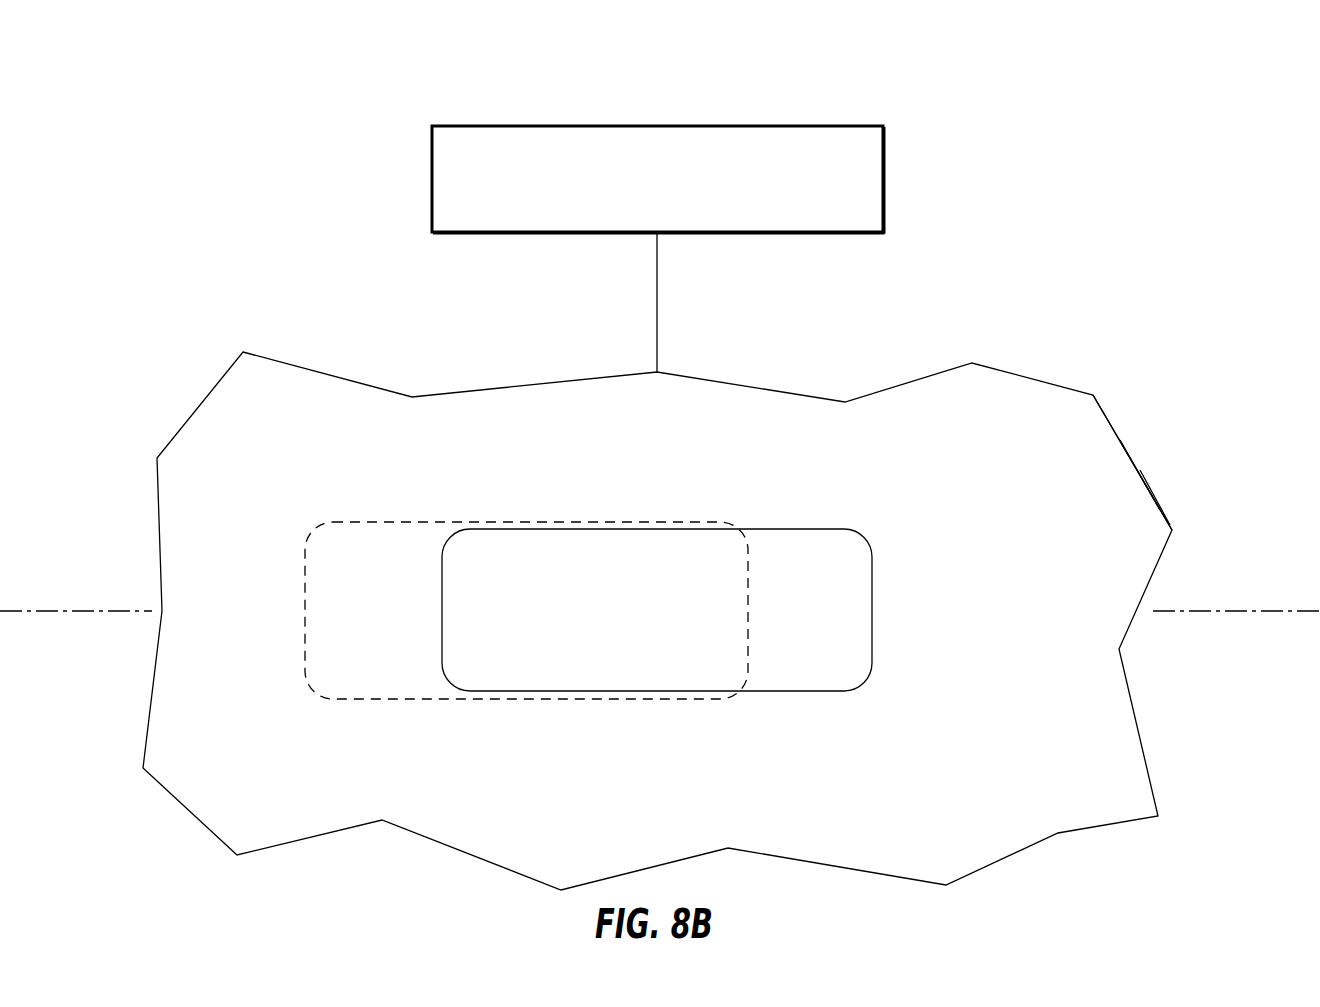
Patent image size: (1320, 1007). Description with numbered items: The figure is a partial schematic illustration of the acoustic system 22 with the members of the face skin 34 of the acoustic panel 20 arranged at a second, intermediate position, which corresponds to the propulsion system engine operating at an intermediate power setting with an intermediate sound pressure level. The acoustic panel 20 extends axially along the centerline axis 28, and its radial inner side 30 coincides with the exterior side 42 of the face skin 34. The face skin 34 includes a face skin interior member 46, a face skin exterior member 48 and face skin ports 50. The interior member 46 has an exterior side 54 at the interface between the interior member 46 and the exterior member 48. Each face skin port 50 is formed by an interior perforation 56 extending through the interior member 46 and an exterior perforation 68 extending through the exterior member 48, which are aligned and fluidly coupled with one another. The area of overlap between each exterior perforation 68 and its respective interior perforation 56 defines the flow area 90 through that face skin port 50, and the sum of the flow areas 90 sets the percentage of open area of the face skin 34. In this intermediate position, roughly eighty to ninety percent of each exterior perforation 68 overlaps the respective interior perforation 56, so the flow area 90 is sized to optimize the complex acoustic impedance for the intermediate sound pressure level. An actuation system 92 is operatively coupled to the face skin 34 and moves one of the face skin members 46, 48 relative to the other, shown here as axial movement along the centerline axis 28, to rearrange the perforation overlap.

The acoustic panel 20 is at (1166, 328).
The acoustic system 22 is at (1166, 92).
The centerline axis 28 is at (1192, 612).
The radial inner side 30 is at (1028, 406).
The exterior side 42 is at (657, 615).
The face skin 34 is at (1132, 406).
The face skin interior member 46 is at (1155, 494).
The face skin exterior member 48 is at (1138, 465).
The face skin port 50 is at (650, 624).
The exterior side of the interior member 54 is at (860, 612).
The interior perforation 56 is at (662, 523).
The exterior perforation 68 is at (868, 542).
The flow area 90 is at (684, 624).
The actuation system 92 is at (887, 178).